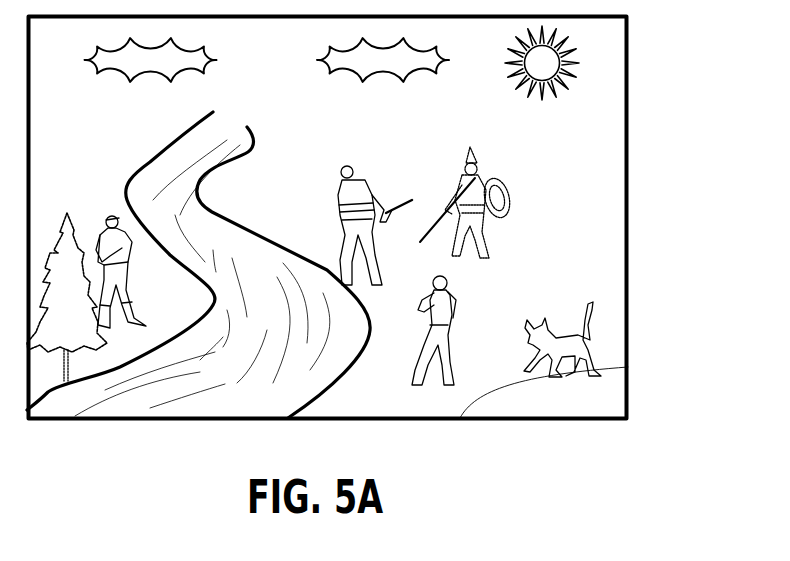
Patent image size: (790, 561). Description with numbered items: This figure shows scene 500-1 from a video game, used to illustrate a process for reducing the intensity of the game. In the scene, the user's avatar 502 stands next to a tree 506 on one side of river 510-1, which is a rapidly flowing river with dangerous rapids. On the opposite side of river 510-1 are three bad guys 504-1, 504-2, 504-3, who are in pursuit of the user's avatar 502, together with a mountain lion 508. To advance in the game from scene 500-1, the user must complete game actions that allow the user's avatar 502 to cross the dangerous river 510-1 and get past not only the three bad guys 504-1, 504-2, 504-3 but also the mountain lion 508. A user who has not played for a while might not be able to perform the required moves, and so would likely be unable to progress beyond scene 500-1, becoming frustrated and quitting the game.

The scene 500-1 is at (628, 82).
The user's avatar 502 is at (110, 215).
The bad guy 504-1 is at (347, 167).
The bad guy 504-2 is at (483, 171).
The bad guy 504-3 is at (462, 296).
The tree 506 is at (55, 247).
The mountain lion 508 is at (530, 344).
The river 510-1 is at (215, 215).